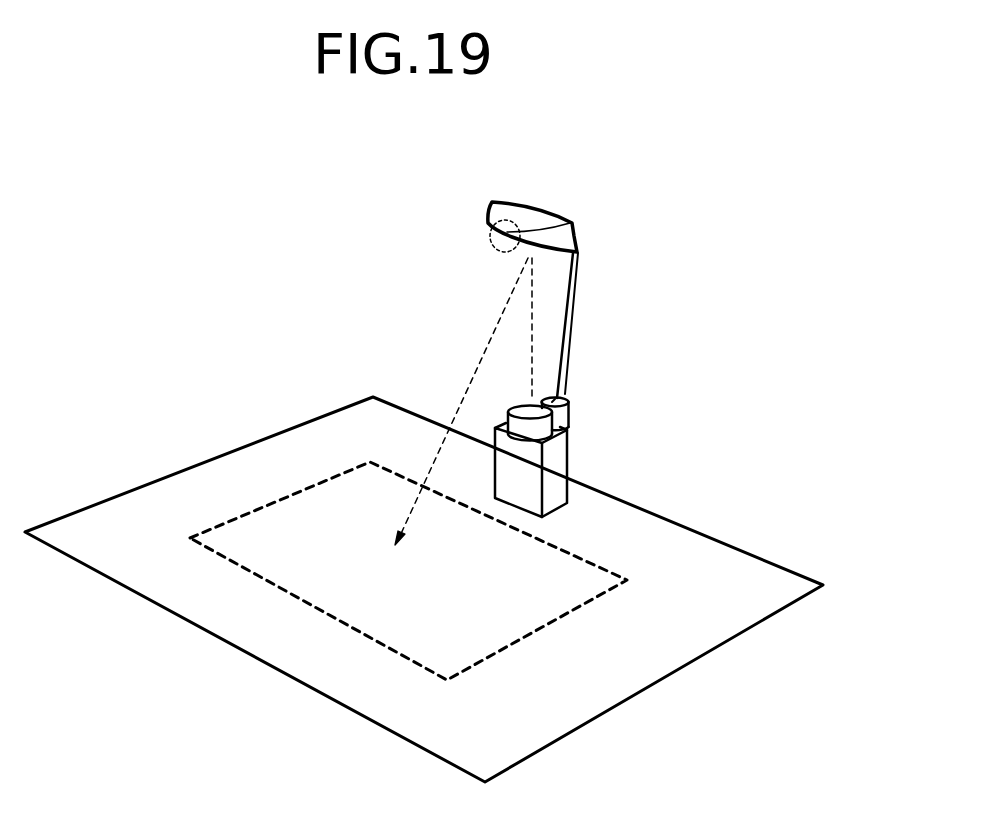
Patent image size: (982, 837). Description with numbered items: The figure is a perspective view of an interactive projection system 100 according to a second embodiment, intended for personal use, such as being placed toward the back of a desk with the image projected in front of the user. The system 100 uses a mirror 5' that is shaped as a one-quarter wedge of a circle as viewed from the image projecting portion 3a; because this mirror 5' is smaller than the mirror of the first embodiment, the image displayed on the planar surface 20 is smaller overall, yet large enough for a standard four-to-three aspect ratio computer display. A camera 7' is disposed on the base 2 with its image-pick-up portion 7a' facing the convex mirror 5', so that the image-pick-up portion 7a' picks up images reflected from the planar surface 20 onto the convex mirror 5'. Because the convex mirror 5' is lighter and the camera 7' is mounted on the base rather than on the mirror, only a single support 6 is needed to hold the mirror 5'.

The interactive projection system 100 is at (640, 172).
The planar surface 20 is at (250, 468).
The base 2 is at (570, 463).
The image projecting portion 3a is at (537, 428).
The camera 7' is at (528, 325).
The image-pick-up portion 7a' is at (591, 378).
The support 6 is at (575, 277).
The mirror 5' is at (528, 373).